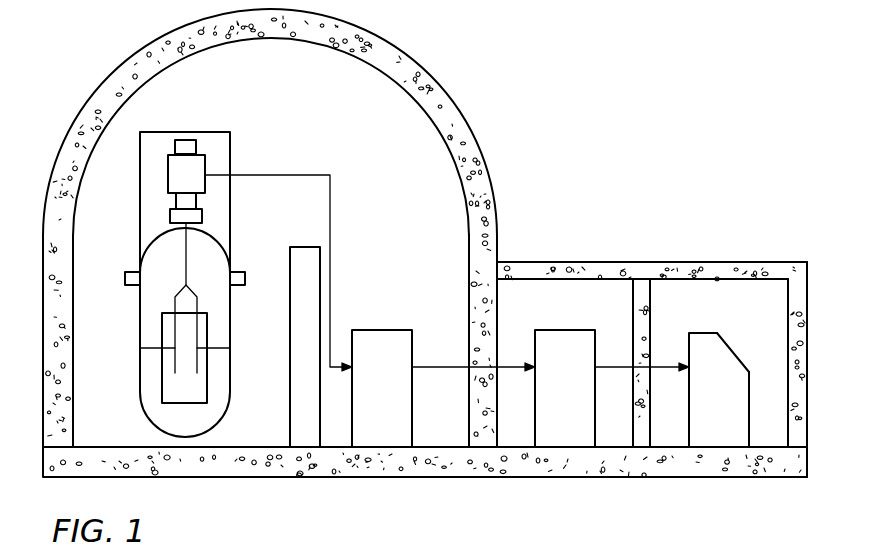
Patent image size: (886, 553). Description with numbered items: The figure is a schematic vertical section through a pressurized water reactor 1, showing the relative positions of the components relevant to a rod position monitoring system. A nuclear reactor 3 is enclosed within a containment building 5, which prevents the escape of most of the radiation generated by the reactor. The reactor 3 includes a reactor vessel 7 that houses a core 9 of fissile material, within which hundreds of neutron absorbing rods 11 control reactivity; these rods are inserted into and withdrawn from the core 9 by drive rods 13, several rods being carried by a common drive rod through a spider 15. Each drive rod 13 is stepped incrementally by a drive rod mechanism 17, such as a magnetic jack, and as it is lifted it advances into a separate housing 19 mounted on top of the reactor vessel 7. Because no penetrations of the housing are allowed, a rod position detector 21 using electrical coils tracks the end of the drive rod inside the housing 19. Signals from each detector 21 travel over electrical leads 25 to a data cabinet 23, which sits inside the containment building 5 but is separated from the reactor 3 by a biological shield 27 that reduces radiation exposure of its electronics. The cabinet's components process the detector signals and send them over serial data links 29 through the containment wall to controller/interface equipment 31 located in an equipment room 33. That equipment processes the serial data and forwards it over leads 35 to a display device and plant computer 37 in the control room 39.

The pressurized water reactor 1 is at (514, 61).
The nuclear reactor 3 is at (130, 319).
The containment building 5 is at (114, 80).
The reactor vessel 7 is at (140, 410).
The core 9 is at (195, 388).
The neutron absorbing rods 11 is at (140, 348).
The drive rods 13 is at (187, 258).
The spider 15 is at (197, 292).
The drive rod mechanism 17 is at (170, 216).
The housing 19 is at (193, 147).
The rod position detector 21 is at (168, 175).
The data cabinet 23 is at (388, 333).
The electrical leads 25 is at (300, 173).
The biological shield 27 is at (308, 255).
The serial data links 29 is at (445, 365).
The controller/interface equipment 31 is at (565, 343).
The equipment room 33 is at (560, 292).
The leads 35 is at (665, 365).
The display device and plant computer 37 is at (730, 345).
The control room 39 is at (720, 288).